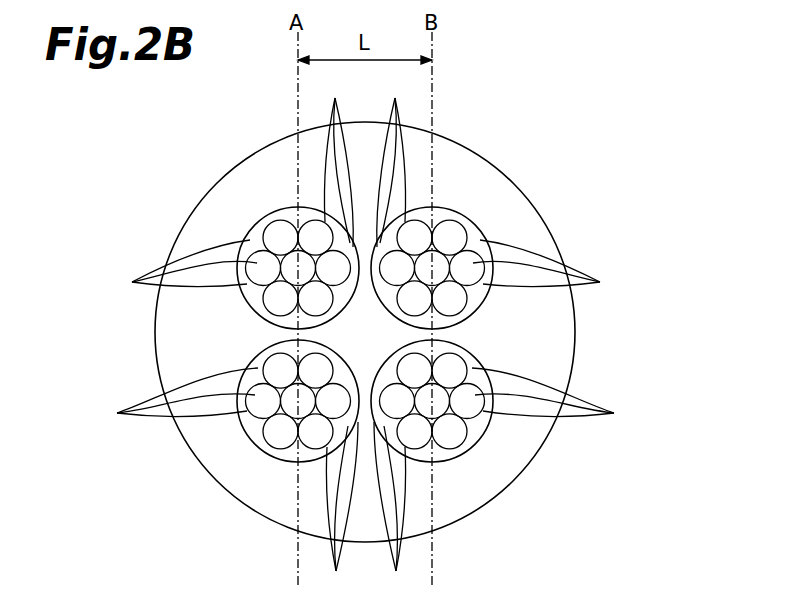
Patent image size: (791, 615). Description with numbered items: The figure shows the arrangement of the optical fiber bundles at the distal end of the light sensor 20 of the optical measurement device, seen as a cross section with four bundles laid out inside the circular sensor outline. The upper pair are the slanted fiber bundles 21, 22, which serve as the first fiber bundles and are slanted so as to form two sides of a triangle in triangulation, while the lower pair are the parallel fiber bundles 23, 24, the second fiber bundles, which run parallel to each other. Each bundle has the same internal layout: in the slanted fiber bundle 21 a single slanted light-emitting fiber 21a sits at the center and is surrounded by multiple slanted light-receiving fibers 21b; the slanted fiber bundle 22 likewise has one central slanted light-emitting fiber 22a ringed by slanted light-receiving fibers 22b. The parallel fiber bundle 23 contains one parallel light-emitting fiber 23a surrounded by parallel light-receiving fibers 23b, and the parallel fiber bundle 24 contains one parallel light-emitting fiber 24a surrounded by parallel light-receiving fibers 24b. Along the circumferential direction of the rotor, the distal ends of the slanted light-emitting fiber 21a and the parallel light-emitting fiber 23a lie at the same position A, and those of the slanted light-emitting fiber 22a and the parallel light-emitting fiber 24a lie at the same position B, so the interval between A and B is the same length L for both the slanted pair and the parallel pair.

The light sensor 20 is at (498, 172).
The slanted fiber bundle 21 is at (267, 215).
The slanted light-emitting fiber 21a is at (292, 237).
The slanted light-receiving fibers 21b is at (226, 183).
The slanted fiber bundle 22 is at (473, 222).
The slanted light-emitting fiber 22a is at (439, 237).
The slanted light-receiving fibers 22b is at (514, 183).
The parallel fiber bundle 23 is at (253, 445).
The parallel light-emitting fiber 23a is at (292, 440).
The parallel light-receiving fibers 23b is at (219, 485).
The parallel fiber bundle 24 is at (478, 445).
The parallel light-emitting fiber 24a is at (448, 440).
The parallel light-receiving fibers 24b is at (519, 485).